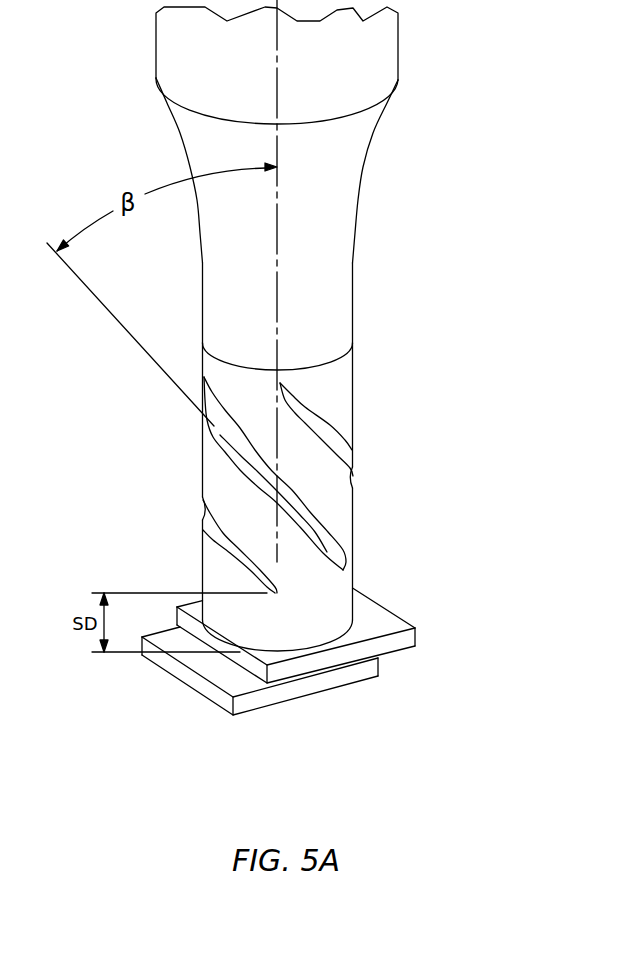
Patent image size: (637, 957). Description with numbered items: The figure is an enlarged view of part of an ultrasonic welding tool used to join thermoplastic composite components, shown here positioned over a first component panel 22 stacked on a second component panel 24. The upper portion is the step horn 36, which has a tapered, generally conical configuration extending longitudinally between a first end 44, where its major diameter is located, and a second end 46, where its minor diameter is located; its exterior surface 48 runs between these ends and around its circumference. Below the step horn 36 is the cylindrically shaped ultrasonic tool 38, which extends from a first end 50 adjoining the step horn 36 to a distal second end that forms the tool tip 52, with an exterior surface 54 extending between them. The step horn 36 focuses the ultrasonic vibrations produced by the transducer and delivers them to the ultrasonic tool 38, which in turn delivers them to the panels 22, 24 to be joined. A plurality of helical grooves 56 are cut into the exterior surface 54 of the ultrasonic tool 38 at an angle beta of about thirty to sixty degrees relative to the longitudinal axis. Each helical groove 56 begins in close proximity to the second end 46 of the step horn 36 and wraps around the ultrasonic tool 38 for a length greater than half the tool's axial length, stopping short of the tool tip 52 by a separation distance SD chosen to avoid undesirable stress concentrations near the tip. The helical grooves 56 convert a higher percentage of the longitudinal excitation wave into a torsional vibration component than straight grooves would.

The first component panel 22 is at (415, 636).
The second component panel 24 is at (208, 692).
The step horn 36 is at (432, 167).
The ultrasonic tool 38 is at (438, 456).
The first end 44 is at (398, 82).
The second end 46 is at (352, 343).
The exterior surface 48 is at (342, 222).
The first end 50 is at (352, 343).
The tool tip 52 is at (277, 652).
The exterior surface 54 is at (342, 517).
The helical grooves 56 is at (330, 425).